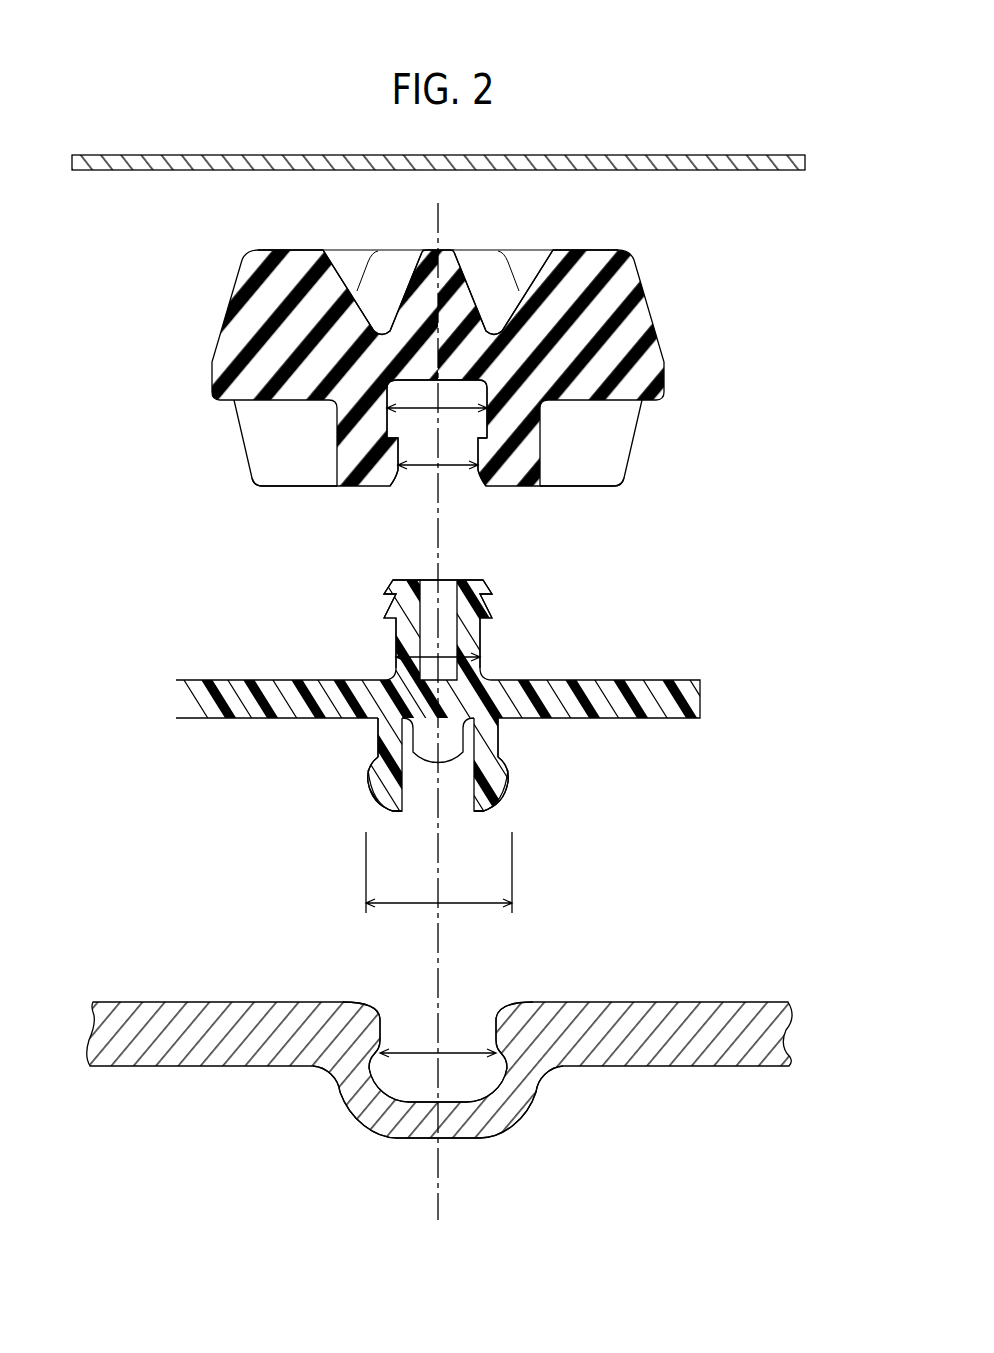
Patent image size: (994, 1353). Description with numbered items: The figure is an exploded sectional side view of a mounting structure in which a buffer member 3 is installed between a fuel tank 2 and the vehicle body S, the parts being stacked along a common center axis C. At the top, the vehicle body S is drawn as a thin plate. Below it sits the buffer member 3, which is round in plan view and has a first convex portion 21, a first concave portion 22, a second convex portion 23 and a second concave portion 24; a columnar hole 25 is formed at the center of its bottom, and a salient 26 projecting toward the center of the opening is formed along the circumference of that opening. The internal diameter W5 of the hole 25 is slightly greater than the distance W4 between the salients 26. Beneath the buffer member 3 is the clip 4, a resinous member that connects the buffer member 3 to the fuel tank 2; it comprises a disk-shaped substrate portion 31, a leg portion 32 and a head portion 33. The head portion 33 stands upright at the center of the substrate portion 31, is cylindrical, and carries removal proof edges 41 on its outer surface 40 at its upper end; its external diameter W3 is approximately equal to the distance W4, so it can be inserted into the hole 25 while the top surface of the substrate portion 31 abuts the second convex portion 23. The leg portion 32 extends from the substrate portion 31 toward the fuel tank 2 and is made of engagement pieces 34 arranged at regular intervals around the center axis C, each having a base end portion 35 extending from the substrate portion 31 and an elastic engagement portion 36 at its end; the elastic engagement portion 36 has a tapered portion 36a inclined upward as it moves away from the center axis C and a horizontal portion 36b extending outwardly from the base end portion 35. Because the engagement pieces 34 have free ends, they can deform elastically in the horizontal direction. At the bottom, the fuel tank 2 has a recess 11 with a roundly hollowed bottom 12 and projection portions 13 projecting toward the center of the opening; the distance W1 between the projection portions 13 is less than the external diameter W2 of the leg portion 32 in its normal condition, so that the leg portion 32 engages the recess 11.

The vehicle body S is at (585, 154).
The center axis C is at (438, 1178).
The fuel tank 2 is at (660, 1123).
The recess 11 is at (403, 1090).
The roundly hollowed bottom 12 is at (468, 1092).
The projection portion 13 is at (382, 1002).
The buffer member 3 is at (703, 254).
The first convex portion 21 is at (255, 239).
The first concave portion 22 is at (340, 262).
The second convex portion 23 is at (273, 490).
The second concave portion 24 is at (251, 407).
The hole 25 is at (391, 423).
The salient 26 is at (473, 483).
The clip 4 is at (449, 722).
The substrate portion 31 is at (663, 677).
The leg portion 32 is at (591, 738).
The head portion 33 is at (481, 606).
The engagement piece 34 is at (388, 822).
The base end portion 35 is at (380, 735).
The elastic engagement portion 36 is at (382, 808).
The tapered portion 36a is at (373, 792).
The horizontal portion 36b is at (377, 753).
The outer surface 40 is at (485, 645).
The removal proof edge 41 is at (513, 628).
The distance between the projection portions W1 is at (438, 1039).
The external diameter of the leg portion W2 is at (439, 872).
The external diameter of the head portion W3 is at (438, 643).
The distance between the salients W4 is at (428, 468).
The internal diameter of the hole W5 is at (457, 401).